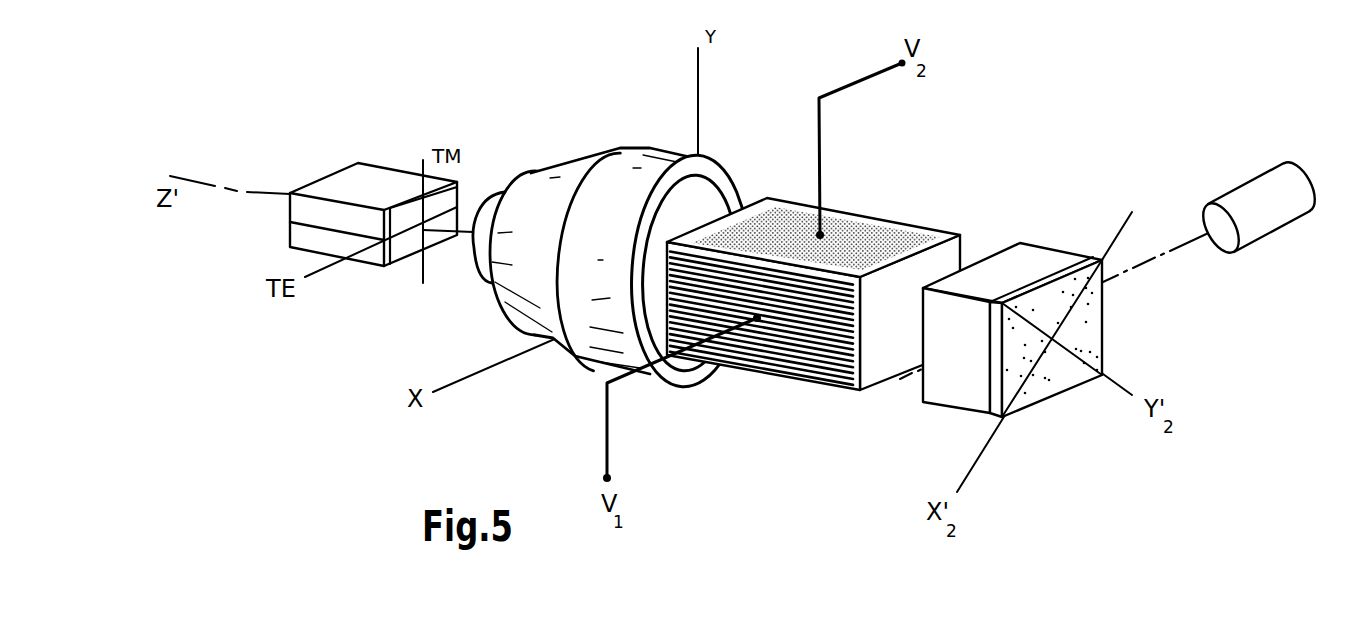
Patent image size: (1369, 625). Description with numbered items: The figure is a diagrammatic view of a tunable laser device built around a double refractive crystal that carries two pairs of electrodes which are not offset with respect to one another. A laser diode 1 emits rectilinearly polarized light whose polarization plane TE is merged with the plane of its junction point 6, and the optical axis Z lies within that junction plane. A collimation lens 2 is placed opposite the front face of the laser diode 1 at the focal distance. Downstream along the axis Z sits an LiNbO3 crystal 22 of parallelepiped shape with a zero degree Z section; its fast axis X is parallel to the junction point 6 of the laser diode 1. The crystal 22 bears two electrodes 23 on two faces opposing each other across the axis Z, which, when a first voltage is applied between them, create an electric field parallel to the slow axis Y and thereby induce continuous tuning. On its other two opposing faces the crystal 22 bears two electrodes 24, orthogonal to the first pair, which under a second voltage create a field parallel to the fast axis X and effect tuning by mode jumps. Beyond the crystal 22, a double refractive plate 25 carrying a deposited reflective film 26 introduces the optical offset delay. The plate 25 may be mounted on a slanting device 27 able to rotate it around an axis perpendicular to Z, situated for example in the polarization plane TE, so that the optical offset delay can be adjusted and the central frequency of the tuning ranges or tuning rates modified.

The laser diode 1 is at (372, 180).
The junction point 6 is at (407, 217).
The collimation lens 2 is at (632, 183).
The LiNbO3 crystal 22 is at (813, 296).
The electrodes 23 is at (851, 233).
The electrodes 24 is at (775, 342).
The double refractive plate 25 is at (1032, 262).
The reflective film 26 is at (1088, 330).
The slanting device 27 is at (1235, 197).